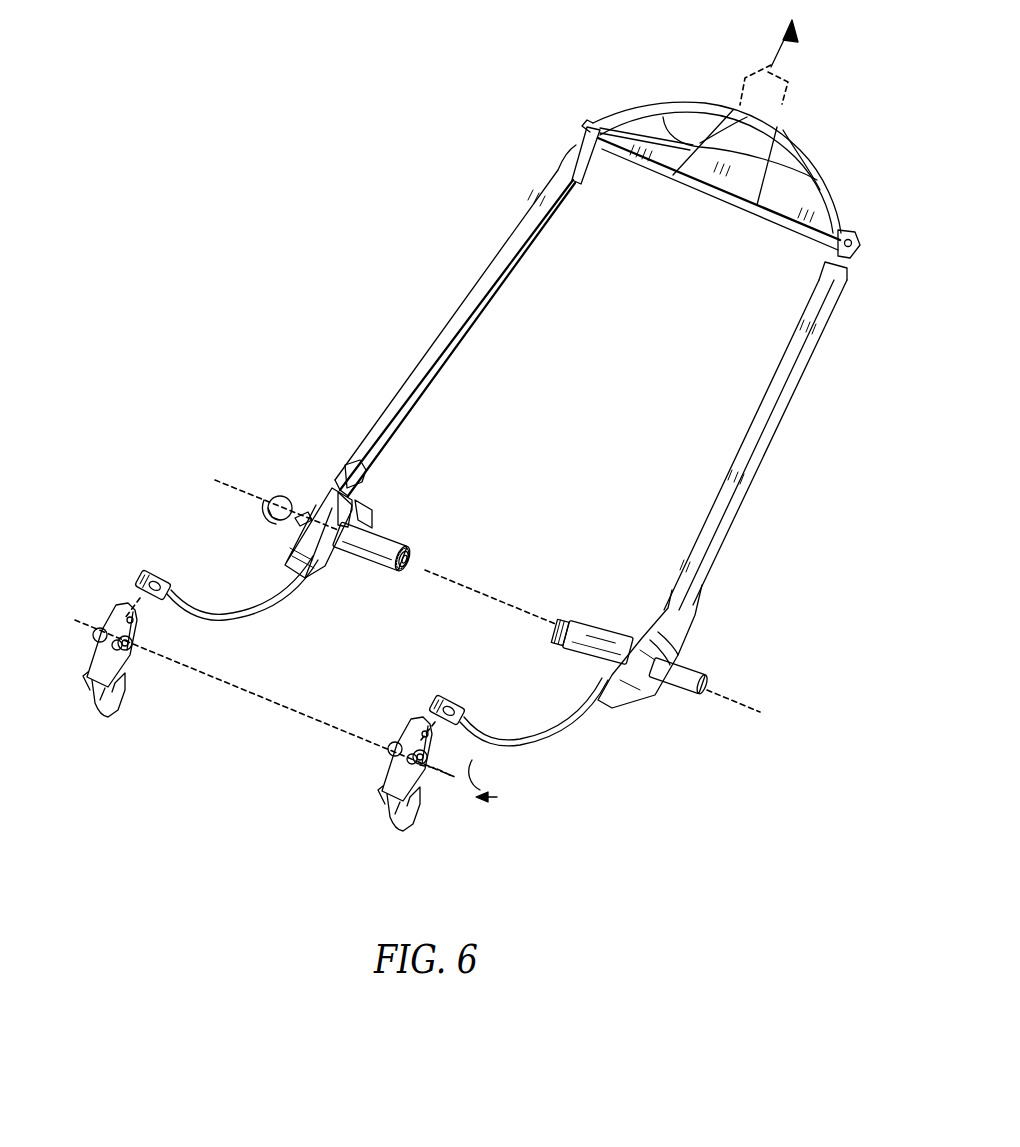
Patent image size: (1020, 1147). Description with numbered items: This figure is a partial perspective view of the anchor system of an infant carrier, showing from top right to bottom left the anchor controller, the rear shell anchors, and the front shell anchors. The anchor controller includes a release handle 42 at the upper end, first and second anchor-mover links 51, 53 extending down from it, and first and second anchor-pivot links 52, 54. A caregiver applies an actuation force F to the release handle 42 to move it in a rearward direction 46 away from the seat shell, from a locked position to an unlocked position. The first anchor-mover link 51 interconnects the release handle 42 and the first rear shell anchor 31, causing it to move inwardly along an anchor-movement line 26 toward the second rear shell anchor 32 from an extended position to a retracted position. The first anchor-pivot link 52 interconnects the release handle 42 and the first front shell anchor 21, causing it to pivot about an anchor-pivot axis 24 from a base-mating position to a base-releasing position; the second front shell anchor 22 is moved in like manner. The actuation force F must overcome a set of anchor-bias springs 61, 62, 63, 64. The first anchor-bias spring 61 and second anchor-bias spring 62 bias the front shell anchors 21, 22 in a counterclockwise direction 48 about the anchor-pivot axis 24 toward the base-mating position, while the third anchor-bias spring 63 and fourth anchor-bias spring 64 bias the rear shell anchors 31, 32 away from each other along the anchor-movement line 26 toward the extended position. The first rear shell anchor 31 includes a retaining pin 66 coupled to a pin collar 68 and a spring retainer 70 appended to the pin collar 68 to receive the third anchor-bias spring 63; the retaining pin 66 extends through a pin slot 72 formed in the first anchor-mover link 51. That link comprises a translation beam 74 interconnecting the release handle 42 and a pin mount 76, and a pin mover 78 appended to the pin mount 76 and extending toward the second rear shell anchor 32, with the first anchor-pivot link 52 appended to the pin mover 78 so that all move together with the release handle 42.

The first front shell anchor 21 is at (121, 699).
The second front shell anchor 22 is at (451, 805).
The anchor-pivot axis 24 is at (451, 770).
The anchor-movement line 26 is at (727, 692).
The first rear shell anchor 31 is at (348, 565).
The second rear shell anchor 32 is at (688, 703).
The release handle 42 is at (787, 157).
The rearward direction 46 is at (787, 50).
The actuation force F is at (795, 78).
The counterclockwise direction 48 is at (472, 762).
The first anchor-mover link 51 is at (410, 377).
The first anchor-pivot link 52 is at (258, 620).
The second anchor-mover link 53 is at (770, 420).
The second anchor-pivot link 54 is at (539, 746).
The first anchor-bias spring 61 is at (130, 647).
The second anchor-bias spring 62 is at (427, 766).
The third anchor-bias spring 63 is at (413, 555).
The fourth anchor-bias spring 64 is at (564, 620).
The retaining pin 66 is at (284, 498).
The pin collar 68 is at (357, 513).
The spring retainer 70 is at (383, 538).
The pin slot 72 is at (337, 500).
The translation beam 74 is at (396, 426).
The pin mount 76 is at (268, 516).
The pin mover 78 is at (298, 522).